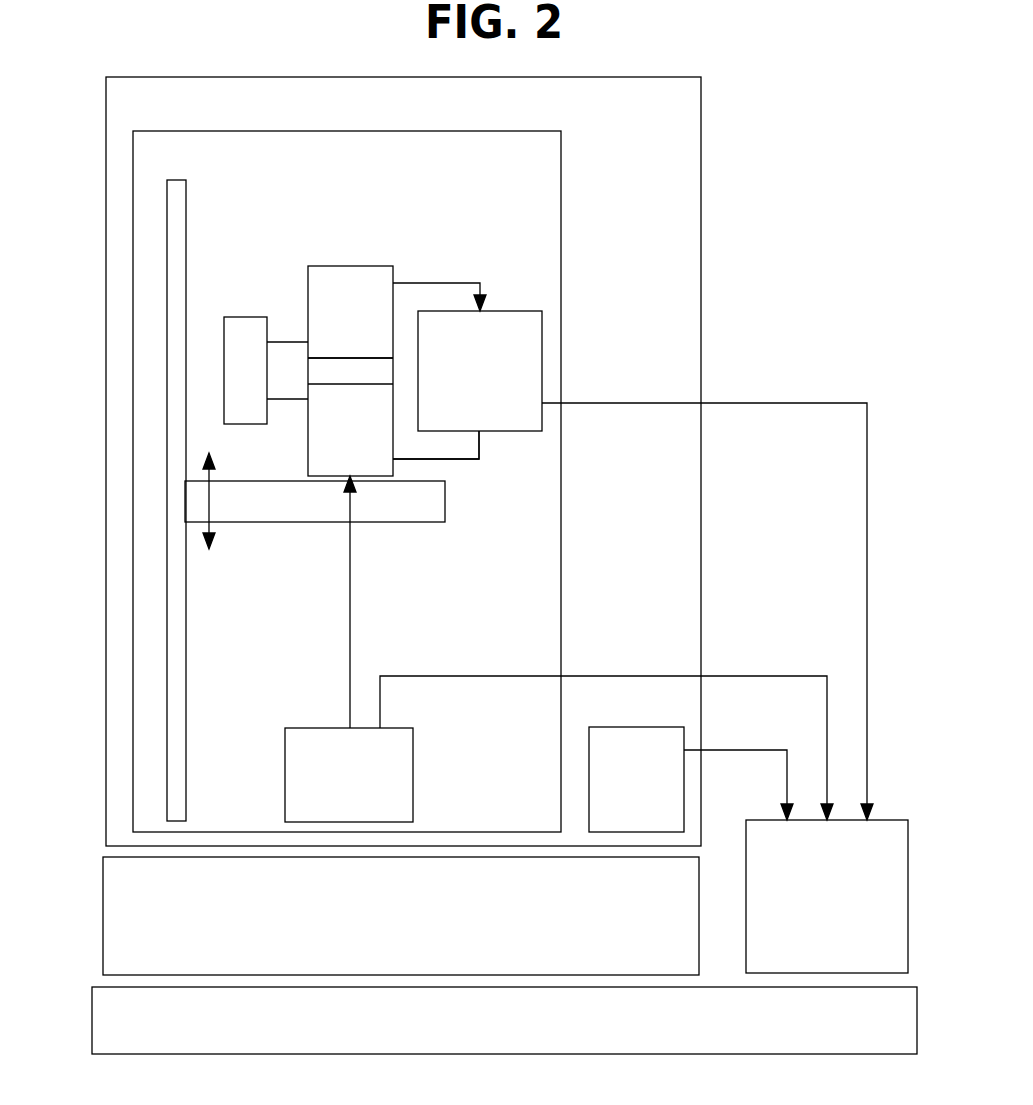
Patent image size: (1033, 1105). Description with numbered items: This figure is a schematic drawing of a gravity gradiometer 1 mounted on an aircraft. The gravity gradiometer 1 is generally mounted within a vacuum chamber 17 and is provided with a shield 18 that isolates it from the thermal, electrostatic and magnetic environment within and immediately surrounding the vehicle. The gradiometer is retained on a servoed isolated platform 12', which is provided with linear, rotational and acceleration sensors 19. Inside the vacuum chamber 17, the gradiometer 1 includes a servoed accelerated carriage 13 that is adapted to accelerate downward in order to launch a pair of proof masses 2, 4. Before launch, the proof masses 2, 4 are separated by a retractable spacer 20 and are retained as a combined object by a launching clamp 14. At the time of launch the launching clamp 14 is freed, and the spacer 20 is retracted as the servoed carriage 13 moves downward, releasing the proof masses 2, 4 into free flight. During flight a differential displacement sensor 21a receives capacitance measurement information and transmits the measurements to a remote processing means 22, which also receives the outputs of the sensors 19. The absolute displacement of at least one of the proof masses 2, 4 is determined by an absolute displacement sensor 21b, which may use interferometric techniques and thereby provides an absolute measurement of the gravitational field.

The gravity gradiometer 1 is at (763, 358).
The proof mass 2 is at (353, 266).
The proof mass 4 is at (312, 449).
The servoed isolated platform 12' is at (376, 890).
The servoed accelerated carriage 13 is at (405, 523).
The launching clamp 14 is at (252, 317).
The vacuum chamber 17 is at (561, 195).
The shield 18 is at (701, 145).
The linear, rotational and acceleration sensors 19 is at (641, 727).
The retractable spacer 20 is at (380, 373).
The differential displacement sensor 21a is at (516, 432).
The absolute displacement sensor 21b is at (413, 773).
The remote processing means 22 is at (746, 893).